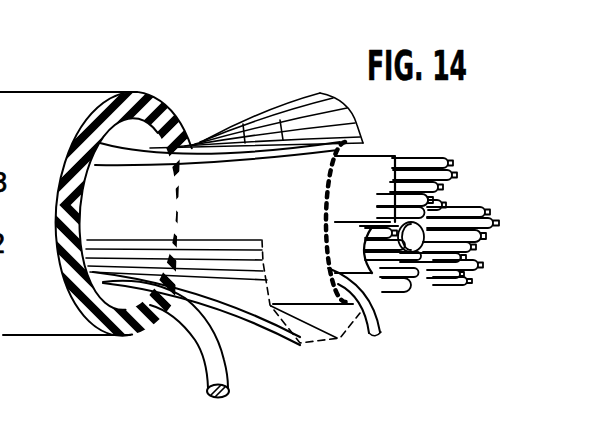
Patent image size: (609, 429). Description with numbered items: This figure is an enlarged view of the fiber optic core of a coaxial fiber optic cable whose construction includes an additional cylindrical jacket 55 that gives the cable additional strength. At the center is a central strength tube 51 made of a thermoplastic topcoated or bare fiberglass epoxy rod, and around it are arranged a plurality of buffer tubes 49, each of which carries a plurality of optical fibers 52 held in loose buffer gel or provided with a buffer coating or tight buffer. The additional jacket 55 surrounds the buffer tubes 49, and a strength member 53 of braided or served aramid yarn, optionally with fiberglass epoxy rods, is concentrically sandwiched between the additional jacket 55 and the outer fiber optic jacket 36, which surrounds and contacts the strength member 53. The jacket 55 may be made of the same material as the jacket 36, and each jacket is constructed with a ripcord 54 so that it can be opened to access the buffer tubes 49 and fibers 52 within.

The fiber optic jacket 36 is at (83, 301).
The buffer tube 49 is at (377, 163).
The central strength tube 51 is at (446, 208).
The optical fiber 52 is at (446, 158).
The strength member 53 is at (287, 113).
The ripcord 54 is at (375, 340).
The additional cylindrical jacket 55 is at (188, 198).